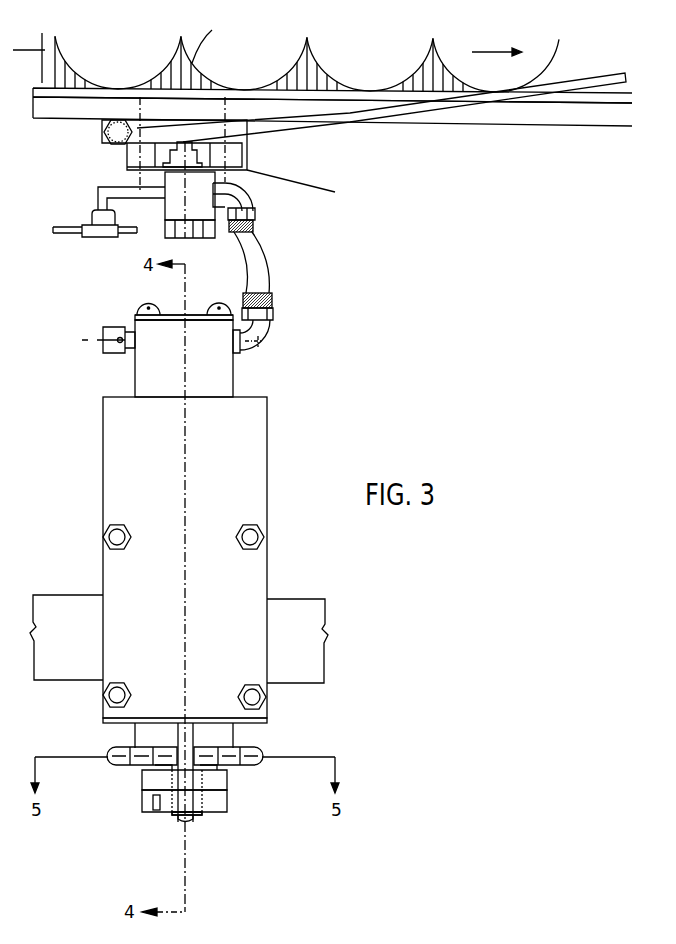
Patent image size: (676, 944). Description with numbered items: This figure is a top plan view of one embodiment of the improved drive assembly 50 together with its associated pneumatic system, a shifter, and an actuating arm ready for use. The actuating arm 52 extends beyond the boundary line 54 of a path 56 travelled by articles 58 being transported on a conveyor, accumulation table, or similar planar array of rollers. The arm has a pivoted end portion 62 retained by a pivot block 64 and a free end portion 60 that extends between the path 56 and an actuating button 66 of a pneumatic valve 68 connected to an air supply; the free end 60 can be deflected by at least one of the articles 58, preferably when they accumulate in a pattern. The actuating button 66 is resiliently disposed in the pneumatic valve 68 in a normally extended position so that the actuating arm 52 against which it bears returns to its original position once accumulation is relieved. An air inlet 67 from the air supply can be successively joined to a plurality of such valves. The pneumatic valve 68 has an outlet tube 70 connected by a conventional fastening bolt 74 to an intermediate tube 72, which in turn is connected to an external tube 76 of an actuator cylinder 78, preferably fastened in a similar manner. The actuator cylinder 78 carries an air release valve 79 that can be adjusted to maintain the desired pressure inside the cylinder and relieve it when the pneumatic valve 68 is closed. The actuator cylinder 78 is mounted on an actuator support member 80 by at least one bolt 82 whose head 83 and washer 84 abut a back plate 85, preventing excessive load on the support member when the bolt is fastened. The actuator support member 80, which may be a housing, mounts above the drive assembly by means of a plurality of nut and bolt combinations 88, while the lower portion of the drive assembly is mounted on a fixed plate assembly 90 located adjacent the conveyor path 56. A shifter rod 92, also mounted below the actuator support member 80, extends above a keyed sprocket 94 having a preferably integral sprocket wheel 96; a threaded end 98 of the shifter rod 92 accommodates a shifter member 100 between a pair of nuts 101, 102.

The improved drive assembly 50 is at (209, 497).
The actuating arm 52 is at (437, 103).
The boundary line 54 is at (568, 98).
The path 56 is at (213, 37).
The articles 58 is at (283, 43).
The free end portion 60 is at (515, 92).
The pivoted end portion 62 is at (113, 145).
The pivot block 64 is at (102, 128).
The actuating button 66 is at (210, 142).
The air inlet 67 is at (131, 233).
The pneumatic valve 68 is at (207, 221).
The outlet tube 70 is at (255, 201).
The intermediate tube 72 is at (265, 265).
The fastening bolt 74 is at (255, 229).
The external tube 76 is at (273, 343).
The actuator cylinder 78 is at (140, 370).
The air release valve 79 is at (110, 327).
The actuator support member 80 is at (108, 447).
The bolt 82 is at (140, 312).
The head 83 is at (157, 307).
The washer 84 is at (165, 311).
The back plate 85 is at (137, 315).
The nut and bolt combinations 88 is at (262, 540).
The fixed plate assembly 90 is at (273, 605).
The shifter rod 92 is at (195, 736).
The keyed sprocket 94 is at (107, 736).
The sprocket wheel 96 is at (258, 764).
The threaded end 98 is at (197, 816).
The shifter member 100 is at (136, 797).
The nut 101 is at (172, 777).
The nut 102 is at (170, 811).